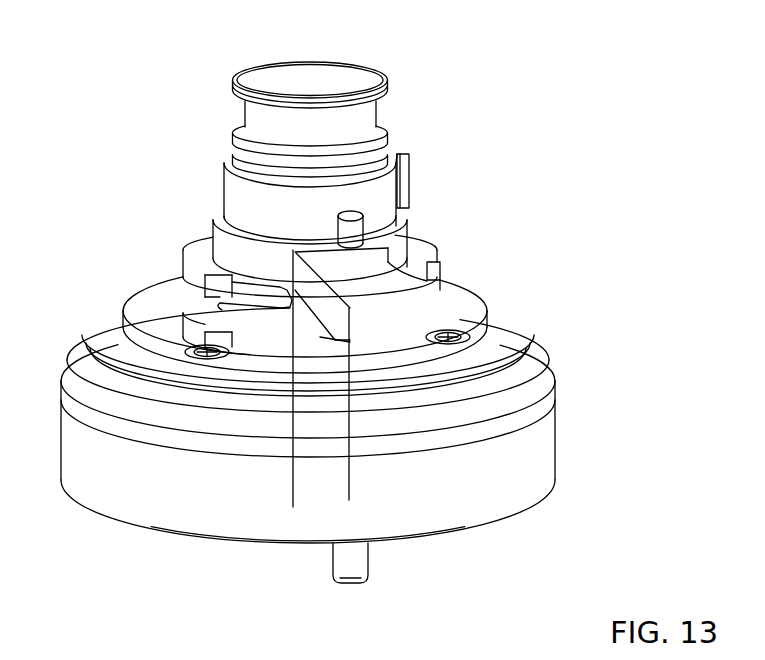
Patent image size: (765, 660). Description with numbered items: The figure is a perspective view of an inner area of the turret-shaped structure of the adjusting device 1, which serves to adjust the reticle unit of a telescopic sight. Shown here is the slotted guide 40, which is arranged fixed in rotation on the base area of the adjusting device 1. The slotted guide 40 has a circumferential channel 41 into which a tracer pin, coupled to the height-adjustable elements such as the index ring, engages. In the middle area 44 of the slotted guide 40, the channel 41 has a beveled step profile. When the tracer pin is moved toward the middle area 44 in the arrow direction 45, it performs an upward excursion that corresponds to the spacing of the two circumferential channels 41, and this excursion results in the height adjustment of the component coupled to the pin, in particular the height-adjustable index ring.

The adjusting device 1 is at (317, 315).
The slotted guide 40 is at (425, 250).
The circumferential channel 41 is at (223, 308).
The middle area of the slotted guide 44 is at (402, 483).
The arrow direction 45 is at (352, 323).